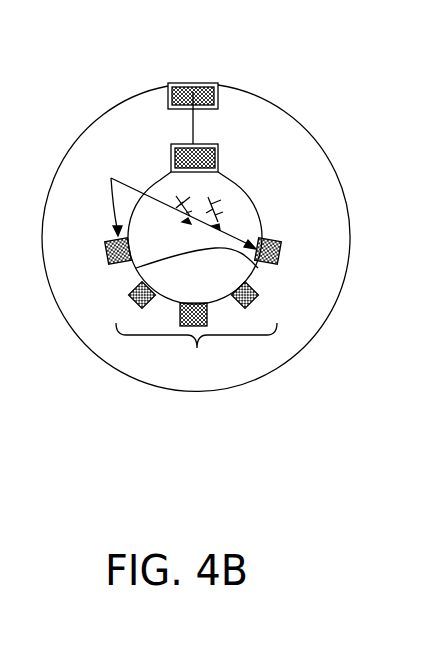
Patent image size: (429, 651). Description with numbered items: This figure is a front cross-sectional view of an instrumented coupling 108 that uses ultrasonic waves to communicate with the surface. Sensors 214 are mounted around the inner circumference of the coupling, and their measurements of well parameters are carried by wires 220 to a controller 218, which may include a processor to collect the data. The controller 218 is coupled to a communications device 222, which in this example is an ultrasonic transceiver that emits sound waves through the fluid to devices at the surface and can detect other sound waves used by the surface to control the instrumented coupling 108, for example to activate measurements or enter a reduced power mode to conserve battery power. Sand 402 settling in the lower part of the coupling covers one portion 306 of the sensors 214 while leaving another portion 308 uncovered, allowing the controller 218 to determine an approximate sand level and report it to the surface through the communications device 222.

The instrumented coupling 108 is at (280, 397).
The sensors 214 is at (180, 313).
The controller 218 is at (200, 92).
The wires 220 is at (193, 124).
The communications device 222 is at (218, 153).
The portion of the sensors 306 is at (196, 353).
The portion of the sensors 308 is at (157, 209).
The sand 402 is at (218, 294).